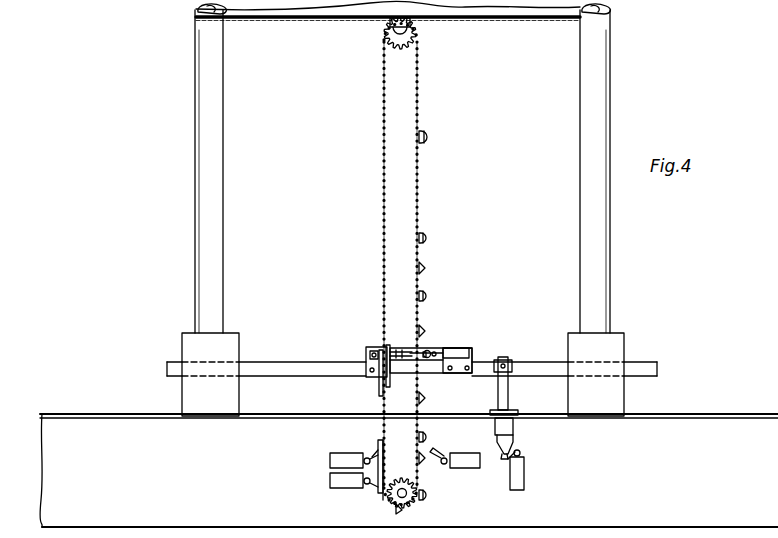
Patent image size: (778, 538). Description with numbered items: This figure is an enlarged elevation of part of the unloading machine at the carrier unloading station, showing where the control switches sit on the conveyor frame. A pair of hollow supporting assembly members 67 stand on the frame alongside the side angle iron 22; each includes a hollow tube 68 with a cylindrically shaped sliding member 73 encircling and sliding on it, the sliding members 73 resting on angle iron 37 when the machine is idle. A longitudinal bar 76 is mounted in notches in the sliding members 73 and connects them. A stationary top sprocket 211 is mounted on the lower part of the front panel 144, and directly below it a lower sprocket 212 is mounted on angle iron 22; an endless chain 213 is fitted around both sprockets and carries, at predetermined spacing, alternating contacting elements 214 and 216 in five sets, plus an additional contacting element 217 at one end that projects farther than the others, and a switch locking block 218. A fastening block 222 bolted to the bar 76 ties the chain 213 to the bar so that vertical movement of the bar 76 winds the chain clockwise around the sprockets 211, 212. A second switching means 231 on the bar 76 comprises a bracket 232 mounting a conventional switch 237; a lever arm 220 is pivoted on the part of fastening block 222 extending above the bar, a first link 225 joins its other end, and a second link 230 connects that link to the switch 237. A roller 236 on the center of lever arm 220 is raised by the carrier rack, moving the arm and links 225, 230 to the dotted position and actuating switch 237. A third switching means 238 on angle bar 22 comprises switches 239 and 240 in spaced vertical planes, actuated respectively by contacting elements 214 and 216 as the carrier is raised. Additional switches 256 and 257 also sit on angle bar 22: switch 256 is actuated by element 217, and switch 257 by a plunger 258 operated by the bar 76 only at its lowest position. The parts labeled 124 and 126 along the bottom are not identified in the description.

The front panel 144 is at (338, 18).
The top sprocket 211 is at (398, 42).
The lower sprocket 212 is at (400, 480).
The endless chain 213 is at (418, 197).
The contacting elements 214 is at (426, 268).
The contacting elements 216 is at (427, 238).
The additional contacting element 217 is at (428, 137).
The switch locking block 218 is at (378, 449).
The lever arm 220 is at (389, 372).
The fastening block 222 is at (368, 380).
The first link 225 is at (428, 362).
The second link 230 is at (432, 351).
The second switching means 231 is at (505, 357).
The bracket 232 is at (470, 376).
The roller 236 is at (408, 350).
The switch 237 is at (471, 347).
The third switching means 238 is at (322, 471).
The switch 239 is at (345, 454).
The switch 240 is at (330, 482).
The switch 256 is at (470, 468).
The switch 257 is at (525, 472).
The plunger 258 is at (512, 445).
The supporting assembly members 67 is at (195, 226).
The hollow tubes 68 is at (195, 274).
The sliding members 73 is at (182, 392).
The longitudinal bar 76 is at (312, 363).
The angle iron 37 is at (282, 413).
The angle iron 22 is at (645, 518).
The frame member 124 is at (504, 531).
The frame member 126 is at (176, 531).